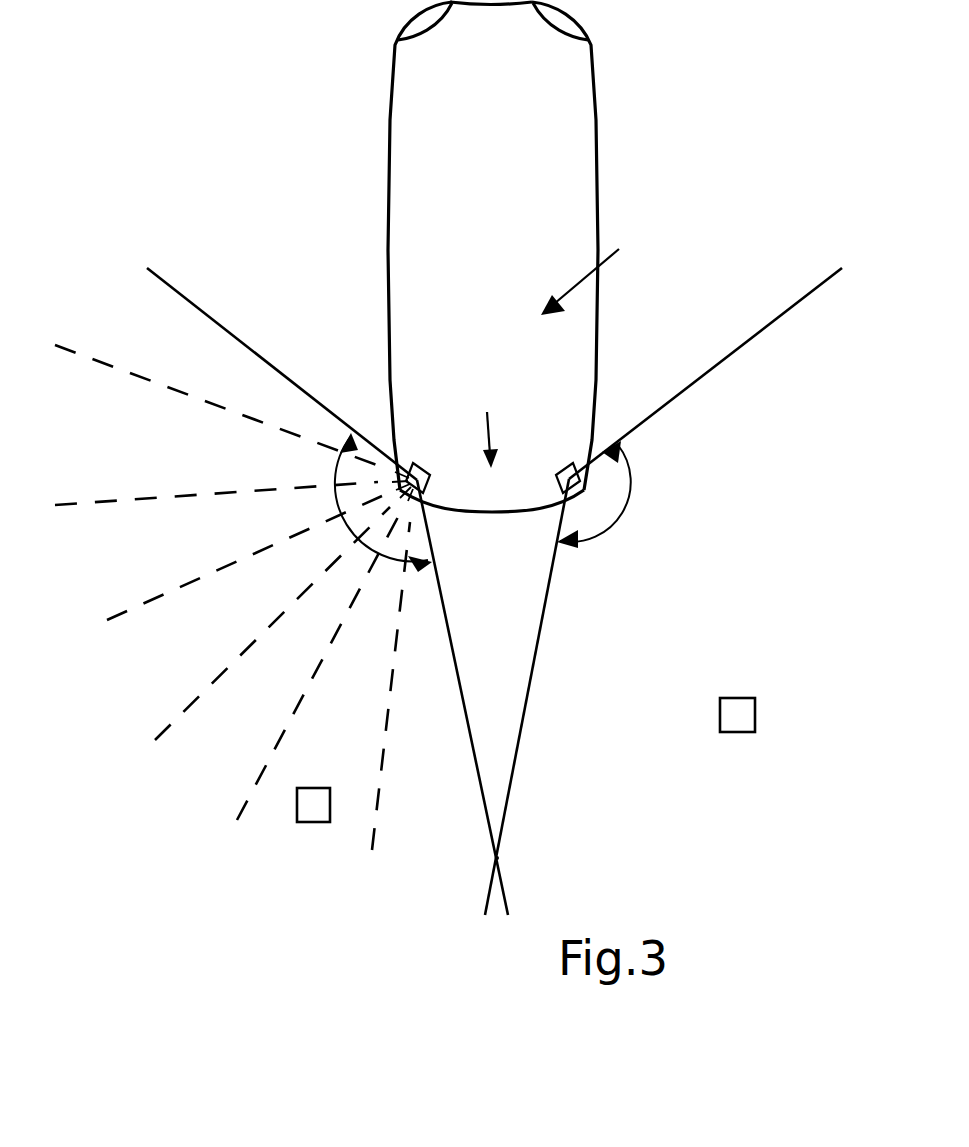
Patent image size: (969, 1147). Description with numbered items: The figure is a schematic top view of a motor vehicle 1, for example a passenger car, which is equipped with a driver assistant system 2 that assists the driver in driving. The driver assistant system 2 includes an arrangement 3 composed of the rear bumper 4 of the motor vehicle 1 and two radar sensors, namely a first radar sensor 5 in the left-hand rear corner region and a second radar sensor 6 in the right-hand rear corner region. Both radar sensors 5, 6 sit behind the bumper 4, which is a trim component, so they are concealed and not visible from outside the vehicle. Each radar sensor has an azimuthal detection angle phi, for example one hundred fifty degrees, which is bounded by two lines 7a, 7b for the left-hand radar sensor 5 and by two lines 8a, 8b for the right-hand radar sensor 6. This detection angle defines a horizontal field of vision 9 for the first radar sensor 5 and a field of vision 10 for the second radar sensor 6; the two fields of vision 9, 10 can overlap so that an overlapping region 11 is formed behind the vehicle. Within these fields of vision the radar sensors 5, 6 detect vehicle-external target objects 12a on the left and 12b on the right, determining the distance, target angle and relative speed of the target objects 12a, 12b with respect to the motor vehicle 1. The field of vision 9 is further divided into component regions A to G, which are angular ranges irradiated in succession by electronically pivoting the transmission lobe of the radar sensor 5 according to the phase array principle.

The motor vehicle 1 is at (597, 195).
The driver assistant system 2 is at (587, 270).
The arrangement 3 is at (488, 426).
The rear bumper 4 is at (488, 513).
The first radar sensor 5 is at (432, 472).
The second radar sensor 6 is at (556, 472).
The line bounding the azimuthal detection angle of the first radar sensor 7a is at (212, 318).
The line bounding the azimuthal detection angle of the first radar sensor 7b is at (458, 672).
The line bounding the azimuthal detection angle of the second radar sensor 8a is at (740, 346).
The line bounding the azimuthal detection angle of the second radar sensor 8b is at (542, 628).
The field of vision 9 is at (164, 680).
The field of vision 10 is at (738, 599).
The overlapping region 11 is at (502, 895).
The target object 12a is at (311, 810).
The target object 12b is at (742, 714).